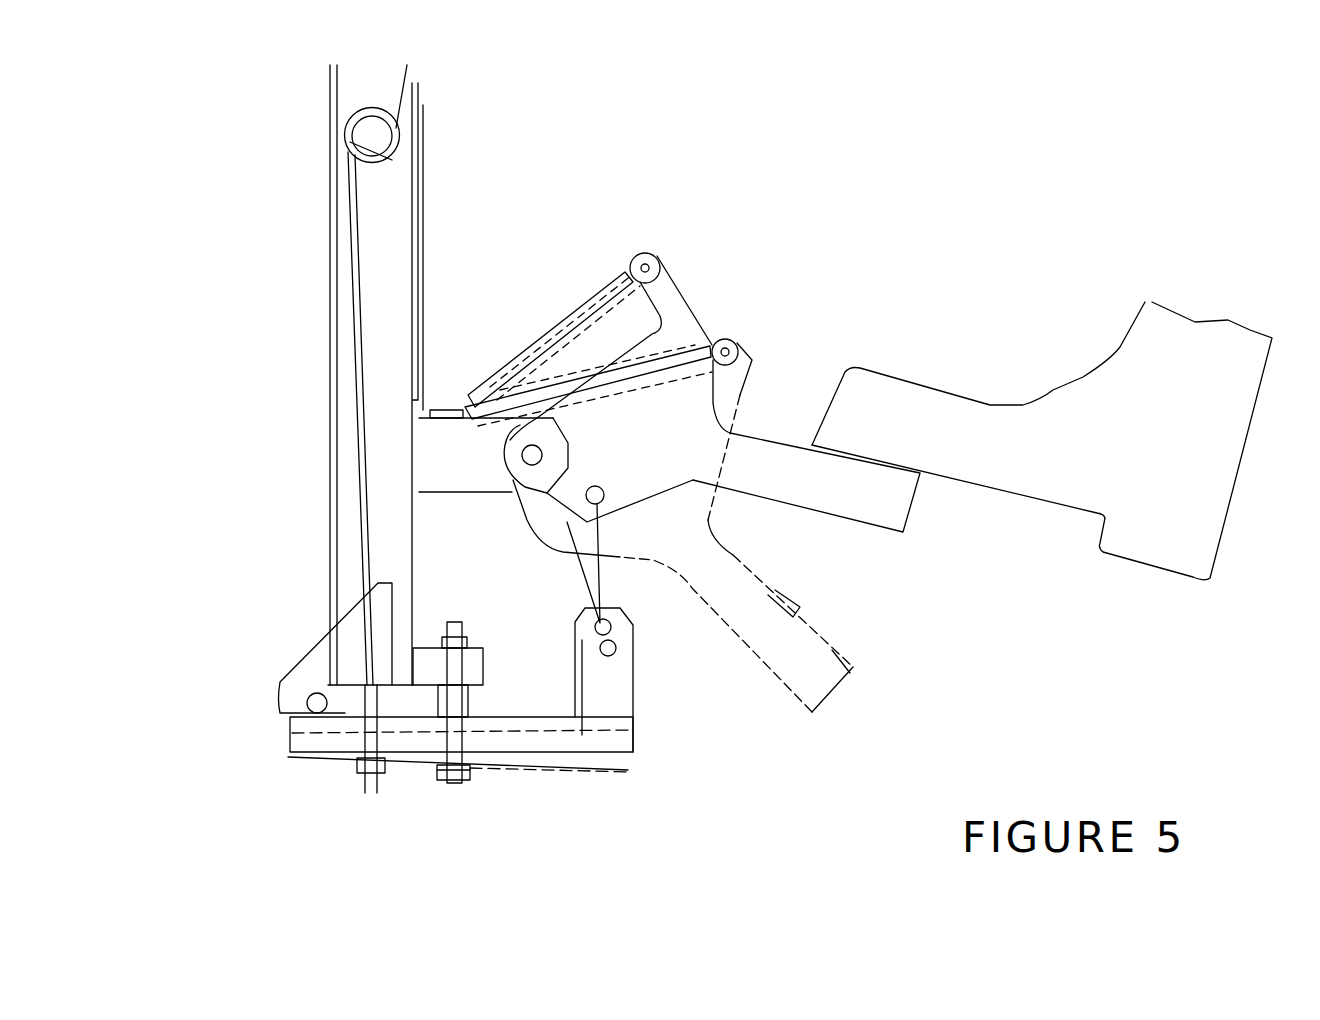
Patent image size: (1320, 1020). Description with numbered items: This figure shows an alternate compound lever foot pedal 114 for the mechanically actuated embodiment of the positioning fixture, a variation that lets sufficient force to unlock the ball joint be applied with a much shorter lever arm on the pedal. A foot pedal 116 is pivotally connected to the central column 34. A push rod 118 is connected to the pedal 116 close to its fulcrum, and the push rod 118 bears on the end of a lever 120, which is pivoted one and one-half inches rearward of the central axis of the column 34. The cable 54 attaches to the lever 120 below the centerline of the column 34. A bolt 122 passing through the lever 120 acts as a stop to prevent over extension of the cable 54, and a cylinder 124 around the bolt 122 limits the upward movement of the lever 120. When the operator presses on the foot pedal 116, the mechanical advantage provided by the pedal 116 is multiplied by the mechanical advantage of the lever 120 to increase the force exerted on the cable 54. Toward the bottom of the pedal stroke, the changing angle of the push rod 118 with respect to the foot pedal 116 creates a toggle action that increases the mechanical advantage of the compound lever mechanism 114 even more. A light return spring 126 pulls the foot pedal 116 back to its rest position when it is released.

The compound lever foot pedal 114 is at (813, 147).
The foot pedal 116 is at (770, 440).
The push rod 118 is at (598, 533).
The lever 120 is at (597, 783).
The bolt 122 is at (455, 785).
The cylinder 124 is at (537, 685).
The return spring 126 is at (598, 293).
The central column 34 is at (413, 262).
The cable 54 is at (387, 288).